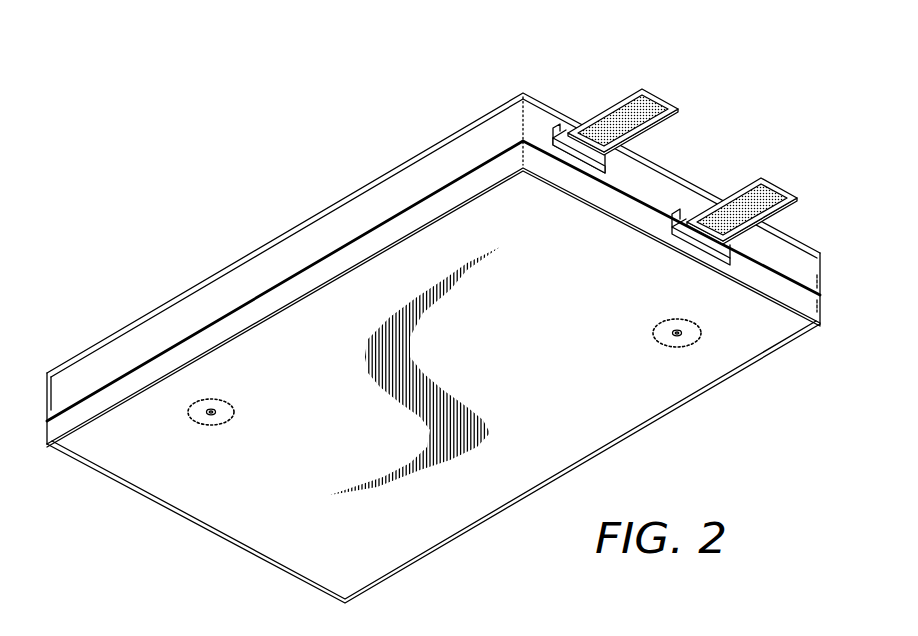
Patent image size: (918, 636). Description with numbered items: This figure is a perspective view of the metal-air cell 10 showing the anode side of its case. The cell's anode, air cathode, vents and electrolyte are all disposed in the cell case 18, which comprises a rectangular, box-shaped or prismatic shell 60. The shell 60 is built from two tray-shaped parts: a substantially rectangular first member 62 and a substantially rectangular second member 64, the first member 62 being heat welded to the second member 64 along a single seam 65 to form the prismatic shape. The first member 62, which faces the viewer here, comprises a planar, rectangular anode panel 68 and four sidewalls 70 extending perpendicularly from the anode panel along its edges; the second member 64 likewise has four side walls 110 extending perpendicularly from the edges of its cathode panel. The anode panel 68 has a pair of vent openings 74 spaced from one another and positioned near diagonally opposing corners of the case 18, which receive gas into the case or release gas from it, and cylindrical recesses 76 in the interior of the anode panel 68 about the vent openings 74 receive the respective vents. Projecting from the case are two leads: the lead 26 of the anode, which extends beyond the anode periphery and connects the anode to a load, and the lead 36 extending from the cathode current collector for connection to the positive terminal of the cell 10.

The metal-air cell 10 is at (176, 159).
The cell case 18 is at (284, 229).
The lead 26 is at (740, 188).
The lead 36 is at (615, 102).
The shell 60 is at (445, 133).
The first member 62 is at (823, 310).
The second member 64 is at (827, 268).
The seam 65 is at (140, 364).
The anode panel 68 is at (516, 333).
The sidewalls 70 is at (313, 282).
The vent openings 74 is at (212, 417).
The cylindrical recesses 76 is at (232, 406).
The side walls 110 is at (241, 281).